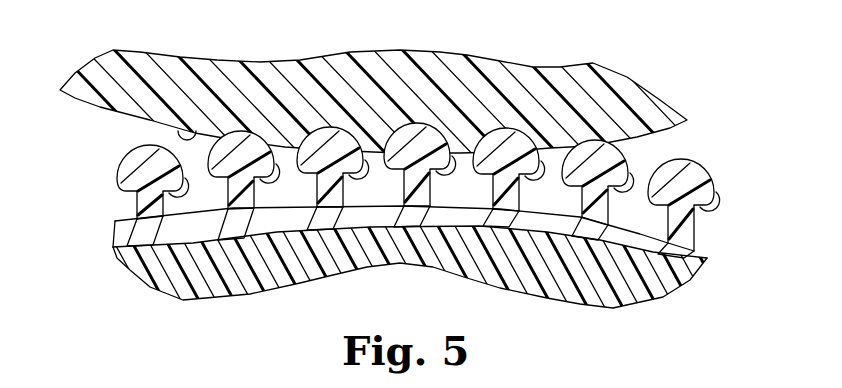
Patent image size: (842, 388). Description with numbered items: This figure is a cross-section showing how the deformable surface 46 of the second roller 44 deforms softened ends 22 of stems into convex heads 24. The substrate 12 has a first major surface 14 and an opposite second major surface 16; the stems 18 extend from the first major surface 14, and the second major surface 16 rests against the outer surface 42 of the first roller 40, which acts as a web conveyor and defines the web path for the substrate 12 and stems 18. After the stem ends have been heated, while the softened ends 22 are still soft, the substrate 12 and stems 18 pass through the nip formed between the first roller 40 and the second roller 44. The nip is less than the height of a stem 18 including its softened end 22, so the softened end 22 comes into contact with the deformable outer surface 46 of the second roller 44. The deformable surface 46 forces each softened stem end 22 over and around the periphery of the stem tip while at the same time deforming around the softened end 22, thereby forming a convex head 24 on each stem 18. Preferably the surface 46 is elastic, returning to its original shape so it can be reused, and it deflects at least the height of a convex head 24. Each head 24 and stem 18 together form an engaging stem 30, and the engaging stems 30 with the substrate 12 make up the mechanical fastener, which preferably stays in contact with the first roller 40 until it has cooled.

The substrate 12 is at (290, 228).
The first major surface 14 is at (628, 230).
The second major surface 16 is at (538, 236).
The stems 18 is at (170, 224).
The softened stem ends 22 is at (122, 156).
The convex heads 24 is at (688, 162).
The engaging stems 30 is at (717, 194).
The first roller 40 is at (664, 286).
The outer surface 42 is at (662, 251).
The second roller 44 is at (517, 95).
The deformable outer surface 46 is at (179, 130).